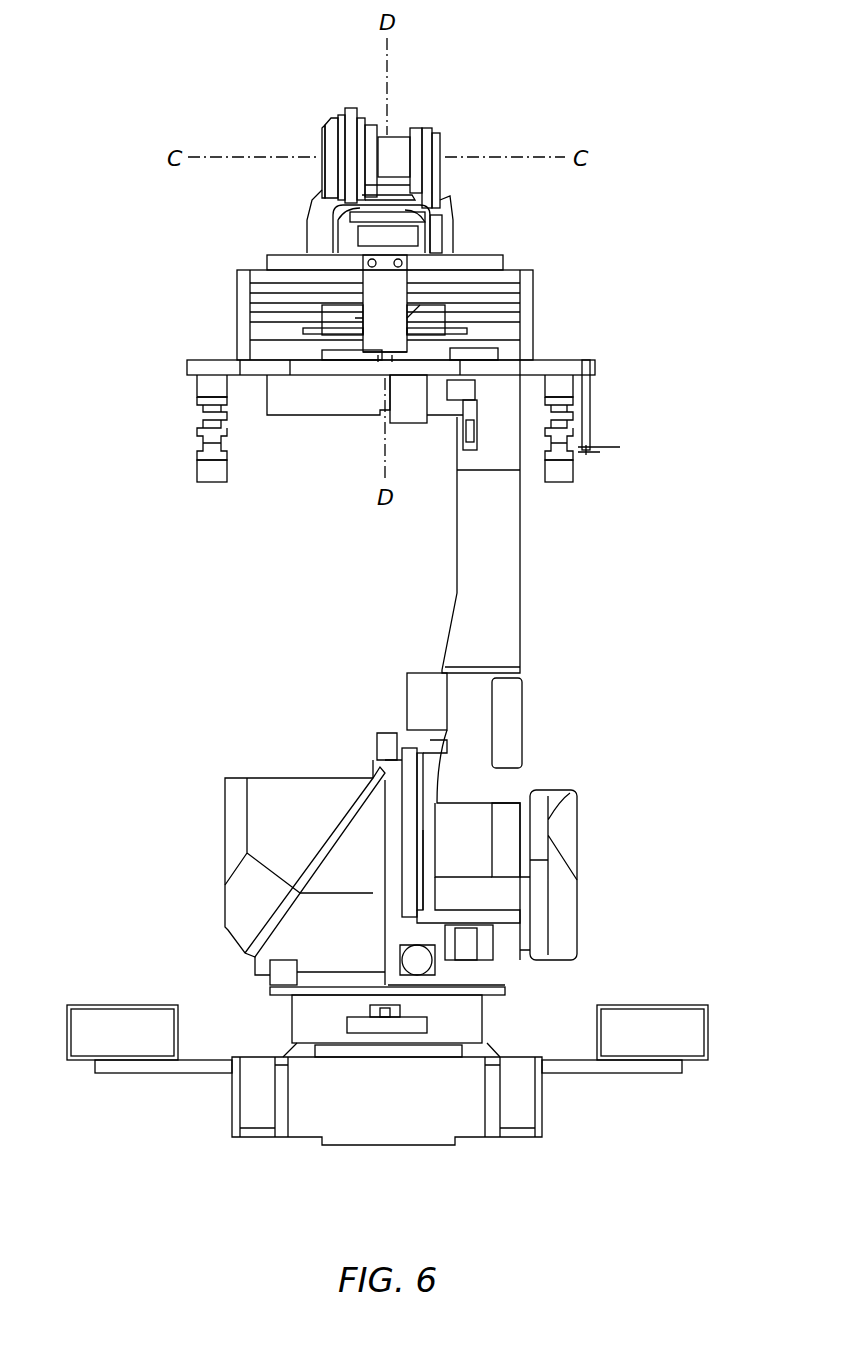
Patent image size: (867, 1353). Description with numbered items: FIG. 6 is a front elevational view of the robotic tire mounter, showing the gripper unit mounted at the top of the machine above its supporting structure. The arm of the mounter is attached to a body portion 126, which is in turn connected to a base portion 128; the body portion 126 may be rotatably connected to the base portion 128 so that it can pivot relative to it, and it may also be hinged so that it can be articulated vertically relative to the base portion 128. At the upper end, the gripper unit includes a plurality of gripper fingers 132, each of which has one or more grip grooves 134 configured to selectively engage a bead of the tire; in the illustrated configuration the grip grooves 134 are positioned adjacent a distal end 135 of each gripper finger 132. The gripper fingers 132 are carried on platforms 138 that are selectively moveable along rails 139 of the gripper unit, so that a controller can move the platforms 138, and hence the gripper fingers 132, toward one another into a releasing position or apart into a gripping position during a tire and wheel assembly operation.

The body portion 126 is at (502, 592).
The base portion 128 is at (628, 899).
The gripper fingers 132 is at (388, 445).
The grip grooves 134 is at (200, 402).
The distal end 135 is at (172, 452).
The platforms 138 is at (202, 358).
The rails 139 is at (325, 300).